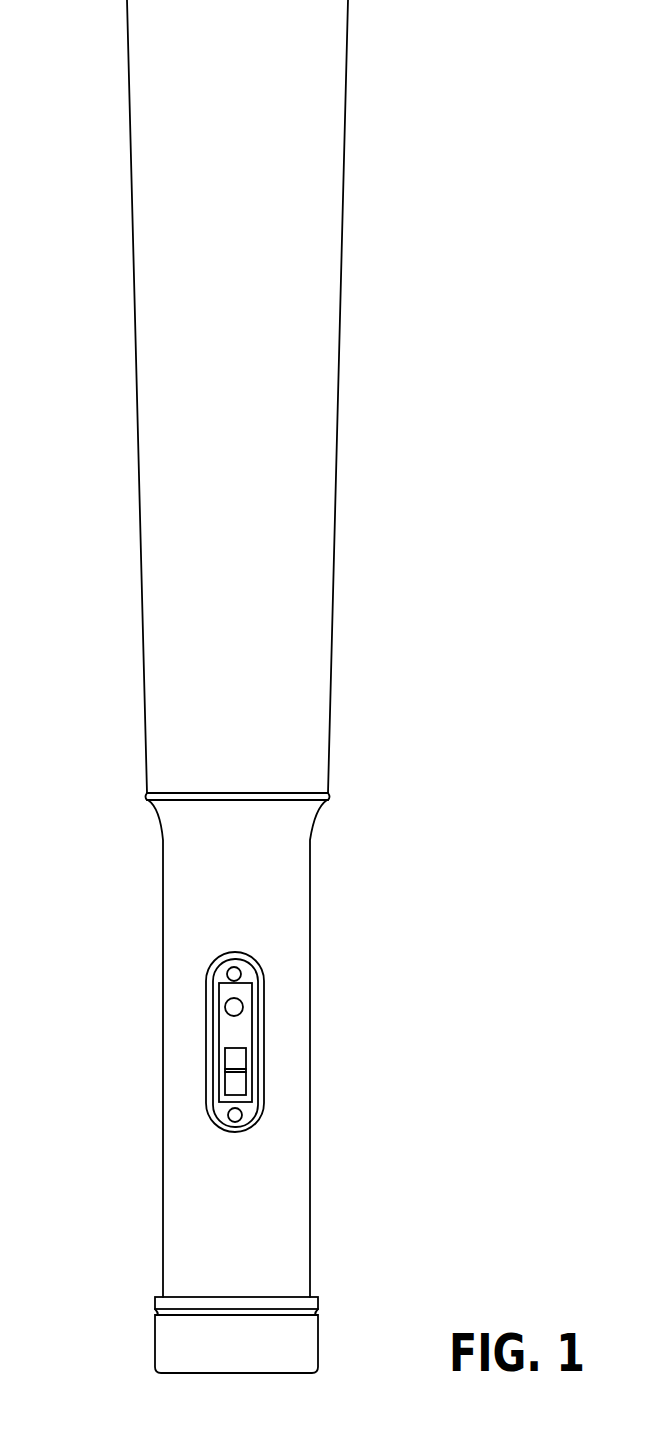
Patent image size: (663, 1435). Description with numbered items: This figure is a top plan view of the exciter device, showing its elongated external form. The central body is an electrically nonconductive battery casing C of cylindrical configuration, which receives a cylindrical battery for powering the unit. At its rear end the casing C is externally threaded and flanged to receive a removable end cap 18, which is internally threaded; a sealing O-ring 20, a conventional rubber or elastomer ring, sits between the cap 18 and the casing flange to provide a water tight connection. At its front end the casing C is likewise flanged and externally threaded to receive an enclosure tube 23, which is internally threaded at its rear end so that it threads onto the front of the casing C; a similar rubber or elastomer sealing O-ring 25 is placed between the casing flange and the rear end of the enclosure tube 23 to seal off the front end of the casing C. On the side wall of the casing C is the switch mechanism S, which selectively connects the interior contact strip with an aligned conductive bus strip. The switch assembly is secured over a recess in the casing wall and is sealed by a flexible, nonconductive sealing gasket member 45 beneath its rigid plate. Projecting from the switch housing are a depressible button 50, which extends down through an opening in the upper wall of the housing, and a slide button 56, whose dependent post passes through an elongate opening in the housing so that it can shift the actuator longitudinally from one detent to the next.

The enclosure tube 23 is at (208, 713).
The sealing O-ring 25 is at (145, 800).
The battery casing C is at (247, 901).
The sealing gasket member 45 is at (217, 962).
The depressible button 50 is at (235, 1016).
The switch mechanism S is at (235, 1039).
The slide button 56 is at (228, 1077).
The sealing O-ring 20 is at (157, 1312).
The end cap 18 is at (183, 1347).